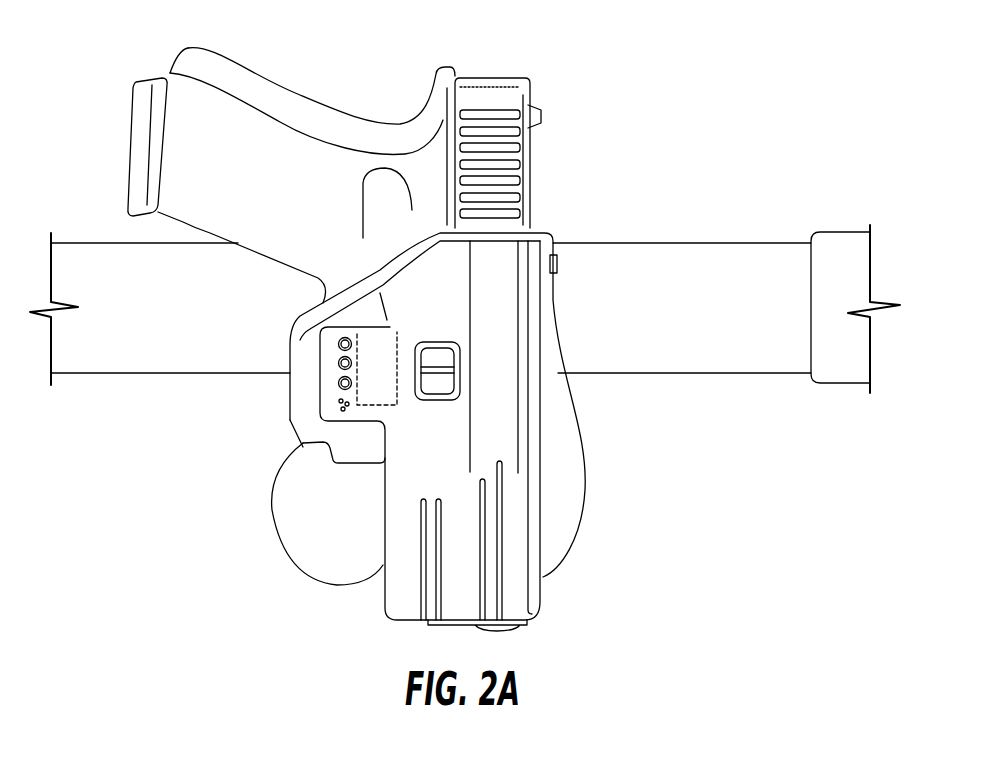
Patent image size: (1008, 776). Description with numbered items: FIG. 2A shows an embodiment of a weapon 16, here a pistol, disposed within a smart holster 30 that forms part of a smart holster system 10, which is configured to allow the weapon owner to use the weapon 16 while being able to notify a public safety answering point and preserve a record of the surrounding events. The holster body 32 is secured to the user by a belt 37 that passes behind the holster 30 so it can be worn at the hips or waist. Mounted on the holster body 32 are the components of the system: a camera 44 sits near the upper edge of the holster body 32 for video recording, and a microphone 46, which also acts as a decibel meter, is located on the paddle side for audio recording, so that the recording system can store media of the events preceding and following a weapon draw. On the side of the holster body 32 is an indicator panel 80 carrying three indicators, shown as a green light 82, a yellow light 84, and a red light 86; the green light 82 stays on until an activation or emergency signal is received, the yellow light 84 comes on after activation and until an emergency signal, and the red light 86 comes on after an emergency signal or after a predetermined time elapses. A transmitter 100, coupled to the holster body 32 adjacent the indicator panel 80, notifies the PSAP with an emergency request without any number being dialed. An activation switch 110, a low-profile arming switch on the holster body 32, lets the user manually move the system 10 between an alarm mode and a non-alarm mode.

The smart holster system 10 is at (633, 98).
The weapon 16 is at (312, 102).
The smart holster 30 is at (572, 492).
The holster body 32 is at (440, 304).
The belt 37 is at (673, 260).
The camera 44 is at (552, 249).
The microphone 46 is at (316, 423).
The indicator panel 80 is at (388, 364).
The green light 82 is at (338, 385).
The yellow light 84 is at (338, 365).
The red light 86 is at (338, 343).
The transmitter 100 is at (398, 397).
The activation switch 110 is at (442, 367).